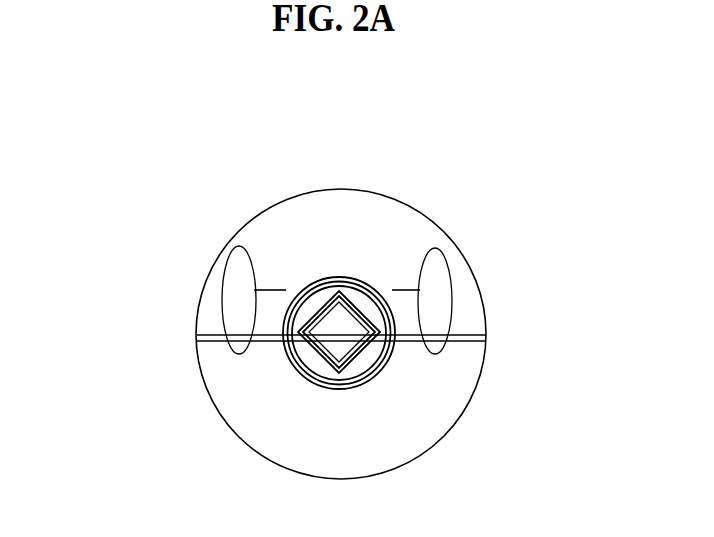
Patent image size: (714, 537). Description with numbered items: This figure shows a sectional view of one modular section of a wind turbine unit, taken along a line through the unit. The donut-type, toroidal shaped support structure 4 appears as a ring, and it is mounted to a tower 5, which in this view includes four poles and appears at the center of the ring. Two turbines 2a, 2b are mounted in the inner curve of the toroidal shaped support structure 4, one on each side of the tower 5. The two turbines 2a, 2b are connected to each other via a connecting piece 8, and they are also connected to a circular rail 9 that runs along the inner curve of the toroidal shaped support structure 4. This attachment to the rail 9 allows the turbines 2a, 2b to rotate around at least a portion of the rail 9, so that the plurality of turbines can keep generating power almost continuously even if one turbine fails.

The toroidal shaped support structure 4 is at (452, 416).
The turbine 2a is at (444, 299).
The turbine 2b is at (231, 300).
The connecting piece 8 is at (272, 289).
The rail 9 is at (333, 281).
The tower 5 is at (355, 372).